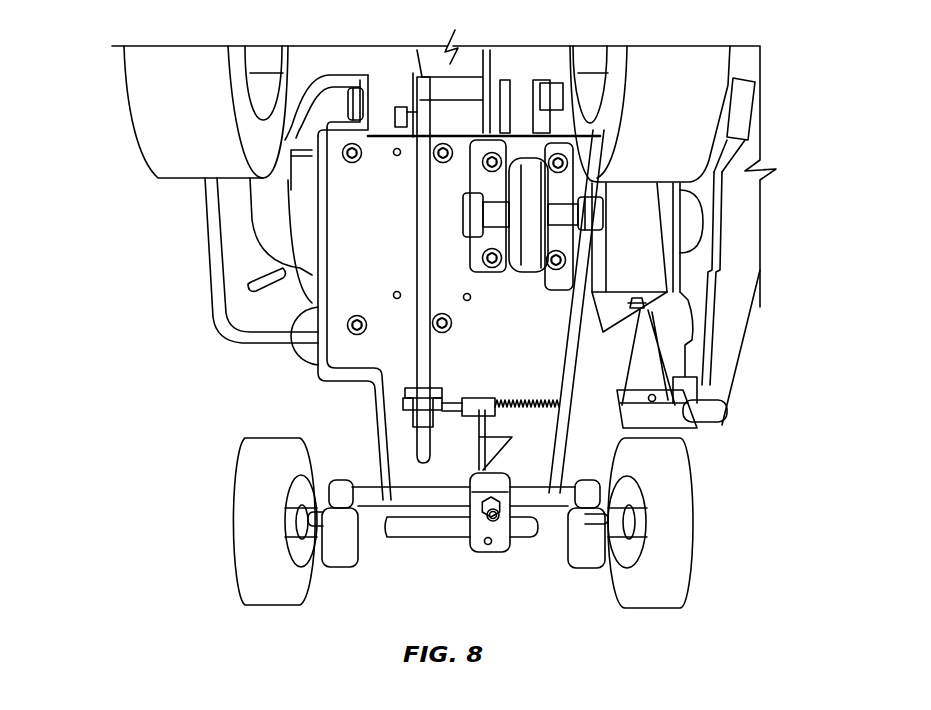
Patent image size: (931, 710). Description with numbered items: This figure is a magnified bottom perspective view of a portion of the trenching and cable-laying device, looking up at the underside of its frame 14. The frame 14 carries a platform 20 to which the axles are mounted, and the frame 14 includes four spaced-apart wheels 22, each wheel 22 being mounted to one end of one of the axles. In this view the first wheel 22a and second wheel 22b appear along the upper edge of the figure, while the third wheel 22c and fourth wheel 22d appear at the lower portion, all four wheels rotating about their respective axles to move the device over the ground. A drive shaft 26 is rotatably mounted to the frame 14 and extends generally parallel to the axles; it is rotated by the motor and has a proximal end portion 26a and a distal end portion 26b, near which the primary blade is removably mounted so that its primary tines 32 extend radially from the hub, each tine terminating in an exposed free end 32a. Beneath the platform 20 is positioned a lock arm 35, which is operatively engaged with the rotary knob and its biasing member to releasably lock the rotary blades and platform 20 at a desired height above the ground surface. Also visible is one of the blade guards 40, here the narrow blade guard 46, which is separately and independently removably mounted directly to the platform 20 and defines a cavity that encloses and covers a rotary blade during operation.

The frame 14 is at (349, 401).
The platform 20 is at (377, 340).
The wheels 22 is at (413, 311).
The first wheel 22a is at (130, 108).
The second wheel 22b is at (678, 65).
The third wheel 22c is at (242, 548).
The fourth wheel 22d is at (683, 540).
The drive shaft 26 is at (475, 188).
The proximal end portion 26a is at (470, 217).
The distal end portion 26b is at (592, 216).
The primary tines 32 is at (713, 350).
The free end 32a is at (762, 72).
The lock arm 35 is at (420, 249).
The blade guards 40 is at (742, 293).
The narrow blade guard 46 is at (727, 313).